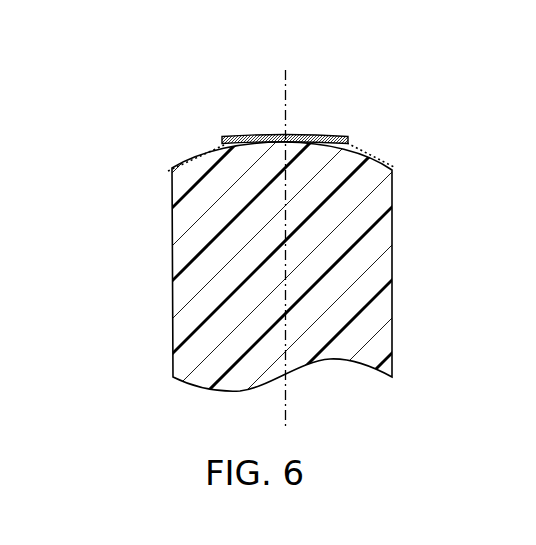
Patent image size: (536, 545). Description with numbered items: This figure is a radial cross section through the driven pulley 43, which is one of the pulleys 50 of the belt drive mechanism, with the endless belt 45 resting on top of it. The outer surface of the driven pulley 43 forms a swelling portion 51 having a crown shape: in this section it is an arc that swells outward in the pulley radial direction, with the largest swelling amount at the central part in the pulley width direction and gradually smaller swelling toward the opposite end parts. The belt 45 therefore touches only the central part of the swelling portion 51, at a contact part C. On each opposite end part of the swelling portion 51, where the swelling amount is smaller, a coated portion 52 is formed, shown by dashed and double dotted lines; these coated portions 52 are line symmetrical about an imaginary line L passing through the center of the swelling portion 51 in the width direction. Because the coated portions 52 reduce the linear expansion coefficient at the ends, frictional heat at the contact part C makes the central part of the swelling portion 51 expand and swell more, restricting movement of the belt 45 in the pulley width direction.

The driven pulley 43 is at (261, 272).
The pulleys 50 is at (173, 270).
The belt 45 is at (259, 135).
The swelling portion 51 is at (353, 150).
The coated portion 52 is at (203, 154).
The contact part C is at (296, 136).
The imaginary line L is at (287, 95).